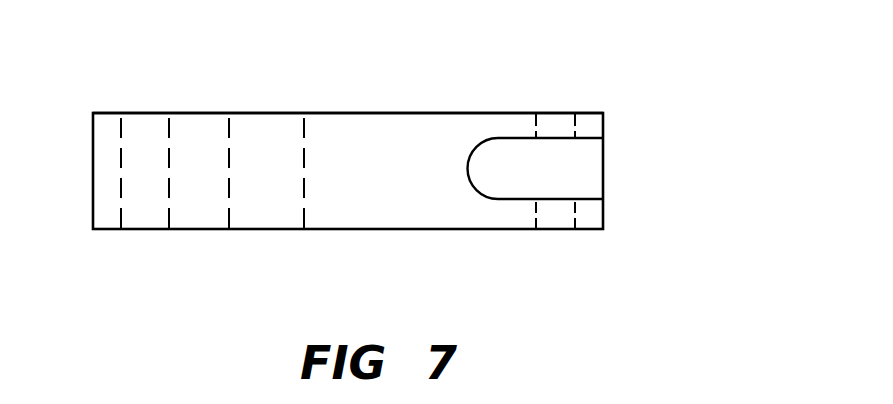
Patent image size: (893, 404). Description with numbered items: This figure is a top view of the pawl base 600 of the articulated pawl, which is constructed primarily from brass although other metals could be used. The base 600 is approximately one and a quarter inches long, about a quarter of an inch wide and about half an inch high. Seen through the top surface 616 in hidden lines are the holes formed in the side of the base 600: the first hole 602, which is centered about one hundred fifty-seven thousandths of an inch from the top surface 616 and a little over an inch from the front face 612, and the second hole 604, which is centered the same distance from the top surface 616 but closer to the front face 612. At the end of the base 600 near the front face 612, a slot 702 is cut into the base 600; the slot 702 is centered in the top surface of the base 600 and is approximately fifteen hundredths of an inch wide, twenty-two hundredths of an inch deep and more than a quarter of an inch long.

The pawl base 600 is at (615, 88).
The first hole 602 is at (143, 143).
The second hole 604 is at (267, 133).
The front face 612 is at (603, 125).
The top surface 616 is at (379, 113).
The slot 702 is at (580, 168).